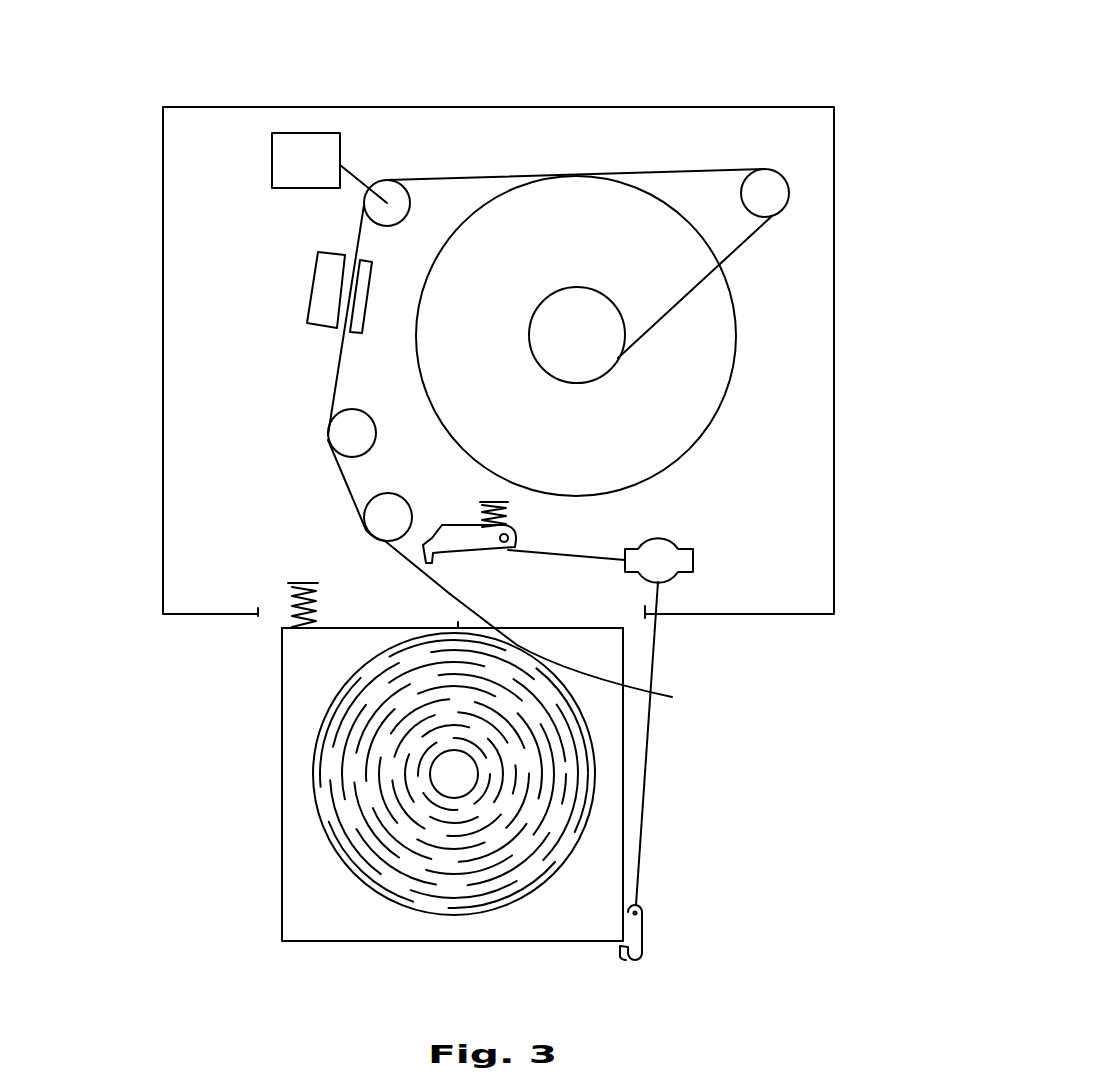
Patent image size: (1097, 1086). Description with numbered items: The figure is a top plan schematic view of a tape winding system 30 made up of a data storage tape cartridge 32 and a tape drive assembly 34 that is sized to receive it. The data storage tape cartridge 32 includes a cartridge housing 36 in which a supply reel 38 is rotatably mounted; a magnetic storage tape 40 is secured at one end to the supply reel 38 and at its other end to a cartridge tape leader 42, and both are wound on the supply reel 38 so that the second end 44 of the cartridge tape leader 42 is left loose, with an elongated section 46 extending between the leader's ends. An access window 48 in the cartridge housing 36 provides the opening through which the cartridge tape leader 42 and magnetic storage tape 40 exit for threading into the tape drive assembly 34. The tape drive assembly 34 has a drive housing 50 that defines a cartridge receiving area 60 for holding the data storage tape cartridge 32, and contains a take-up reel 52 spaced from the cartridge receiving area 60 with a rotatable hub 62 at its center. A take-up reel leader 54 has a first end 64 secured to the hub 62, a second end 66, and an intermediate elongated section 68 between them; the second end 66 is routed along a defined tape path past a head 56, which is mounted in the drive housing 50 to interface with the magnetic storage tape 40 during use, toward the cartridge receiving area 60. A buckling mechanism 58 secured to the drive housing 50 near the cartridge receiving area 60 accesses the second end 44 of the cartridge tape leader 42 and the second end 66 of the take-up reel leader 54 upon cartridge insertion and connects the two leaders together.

The tape winding system 30 is at (702, 73).
The data storage tape cartridge 32 is at (259, 771).
The tape drive assembly 34 is at (137, 312).
The cartridge housing 36 is at (282, 864).
The supply reel 38 is at (550, 880).
The magnetic storage tape 40 is at (567, 793).
The cartridge tape leader 42 is at (578, 654).
The second end 44 is at (447, 592).
The elongated section 46 is at (490, 640).
The access window 48 is at (522, 626).
The drive housing 50 is at (835, 257).
The take-up reel 52 is at (697, 437).
The take-up reel leader 54 is at (335, 383).
The head 56 is at (318, 266).
The buckling mechanism 58 is at (467, 554).
The cartridge receiving area 60 is at (258, 618).
The hub 62 is at (598, 378).
The first end 64 is at (618, 358).
The second end 66 is at (446, 597).
The intermediate elongated section 68 is at (448, 178).